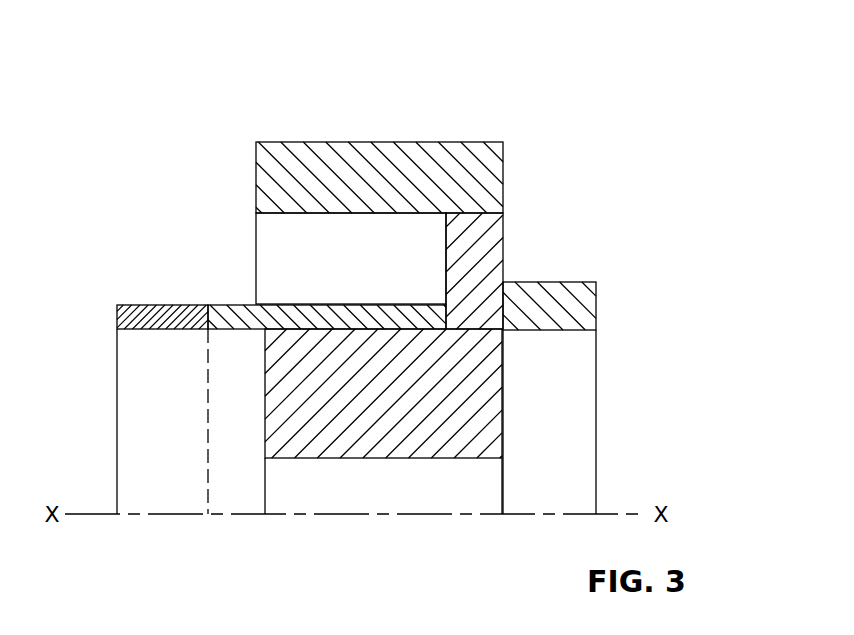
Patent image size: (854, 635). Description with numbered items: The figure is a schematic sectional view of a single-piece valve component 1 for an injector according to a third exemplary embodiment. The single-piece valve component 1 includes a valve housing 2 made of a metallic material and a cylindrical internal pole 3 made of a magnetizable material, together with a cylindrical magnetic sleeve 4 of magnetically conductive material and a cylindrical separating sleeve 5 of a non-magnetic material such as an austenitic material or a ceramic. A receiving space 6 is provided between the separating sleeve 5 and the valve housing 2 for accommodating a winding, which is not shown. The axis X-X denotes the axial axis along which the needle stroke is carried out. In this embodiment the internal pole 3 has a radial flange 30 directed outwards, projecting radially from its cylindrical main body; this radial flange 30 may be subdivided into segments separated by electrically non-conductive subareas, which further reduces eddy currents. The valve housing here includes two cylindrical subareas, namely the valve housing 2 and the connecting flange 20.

The single-piece valve component 1 is at (208, 122).
The valve housing 2 is at (450, 168).
The internal pole 3 is at (349, 405).
The magnetic sleeve 4 is at (149, 314).
The separating sleeve 5 is at (299, 316).
The receiving space 6 is at (290, 238).
The connecting flange 20 is at (565, 303).
The radial flange 30 is at (478, 254).